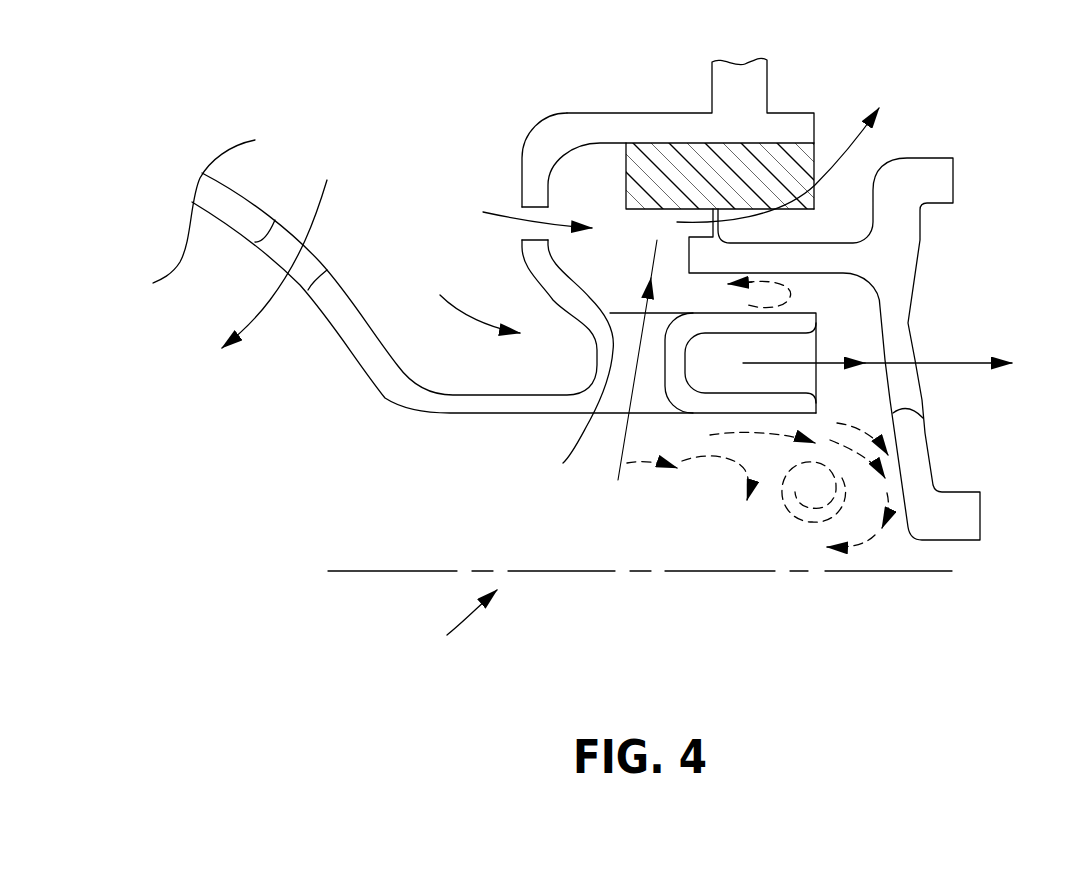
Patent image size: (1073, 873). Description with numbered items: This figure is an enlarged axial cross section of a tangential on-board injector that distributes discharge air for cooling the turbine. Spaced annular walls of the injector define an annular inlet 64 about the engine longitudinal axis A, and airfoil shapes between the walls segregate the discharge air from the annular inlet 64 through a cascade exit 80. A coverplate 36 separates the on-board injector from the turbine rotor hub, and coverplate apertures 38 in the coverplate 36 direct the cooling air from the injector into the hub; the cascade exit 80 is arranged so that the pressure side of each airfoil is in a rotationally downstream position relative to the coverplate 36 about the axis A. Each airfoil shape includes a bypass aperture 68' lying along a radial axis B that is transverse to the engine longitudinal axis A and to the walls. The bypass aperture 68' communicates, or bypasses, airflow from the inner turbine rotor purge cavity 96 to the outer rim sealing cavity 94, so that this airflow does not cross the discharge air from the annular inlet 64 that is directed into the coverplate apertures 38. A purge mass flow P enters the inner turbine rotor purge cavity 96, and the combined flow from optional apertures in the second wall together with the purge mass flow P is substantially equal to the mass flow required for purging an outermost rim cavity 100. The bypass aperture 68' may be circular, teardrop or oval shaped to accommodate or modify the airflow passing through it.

The coverplate 36 is at (918, 263).
The coverplate apertures 38 is at (880, 322).
The annular inlet 64 is at (505, 382).
The curved end wall of duct 68' is at (582, 351).
The cascade exit 80 is at (817, 348).
The outer rim sealing cavity 94 is at (630, 257).
The inner turbine rotor purge cavity 96 is at (486, 478).
The outermost rim cavity 100 is at (933, 118).
The engine longitudinal axis A is at (877, 571).
The radial axis B is at (618, 460).
The purge mass flow P is at (462, 622).